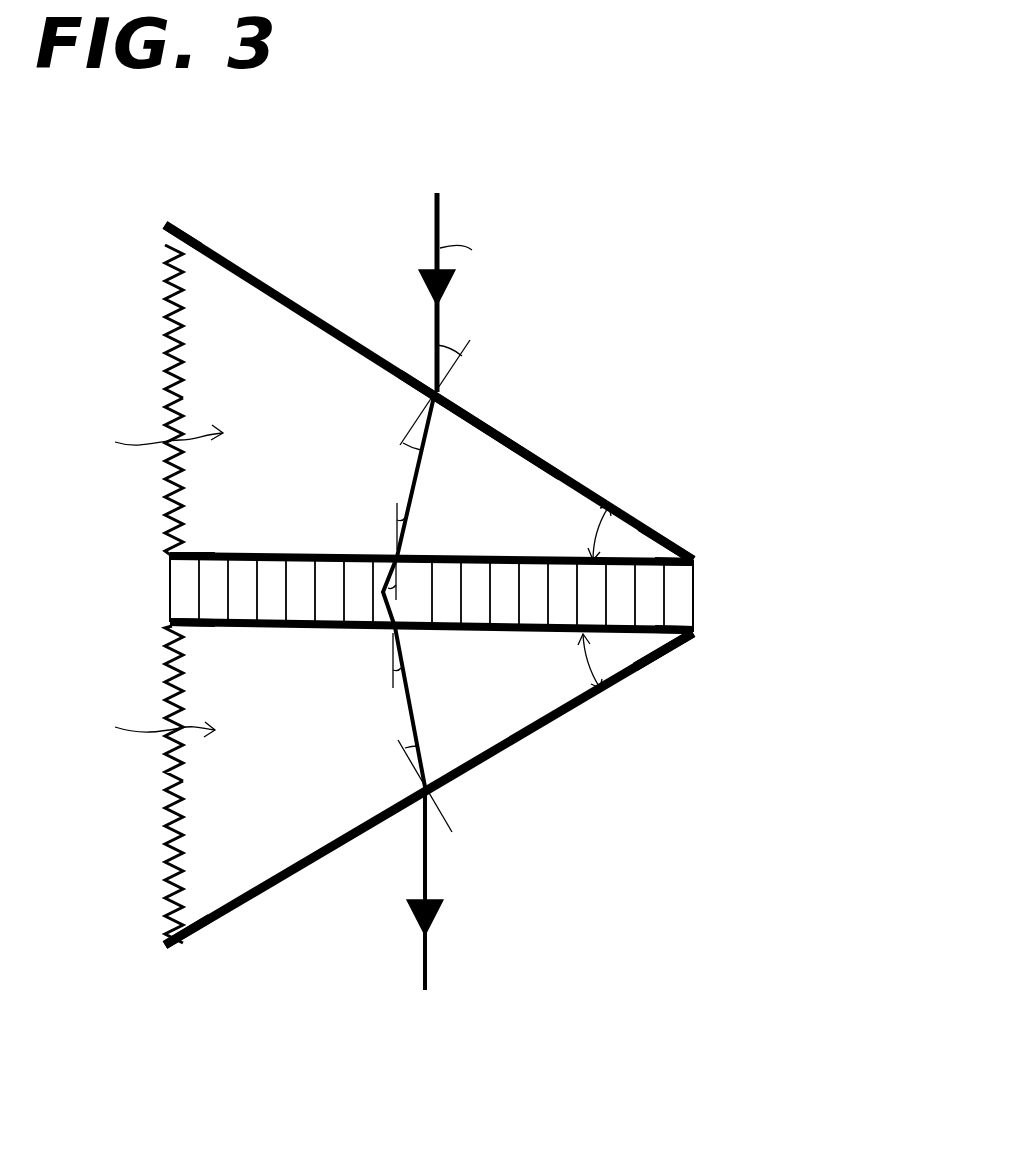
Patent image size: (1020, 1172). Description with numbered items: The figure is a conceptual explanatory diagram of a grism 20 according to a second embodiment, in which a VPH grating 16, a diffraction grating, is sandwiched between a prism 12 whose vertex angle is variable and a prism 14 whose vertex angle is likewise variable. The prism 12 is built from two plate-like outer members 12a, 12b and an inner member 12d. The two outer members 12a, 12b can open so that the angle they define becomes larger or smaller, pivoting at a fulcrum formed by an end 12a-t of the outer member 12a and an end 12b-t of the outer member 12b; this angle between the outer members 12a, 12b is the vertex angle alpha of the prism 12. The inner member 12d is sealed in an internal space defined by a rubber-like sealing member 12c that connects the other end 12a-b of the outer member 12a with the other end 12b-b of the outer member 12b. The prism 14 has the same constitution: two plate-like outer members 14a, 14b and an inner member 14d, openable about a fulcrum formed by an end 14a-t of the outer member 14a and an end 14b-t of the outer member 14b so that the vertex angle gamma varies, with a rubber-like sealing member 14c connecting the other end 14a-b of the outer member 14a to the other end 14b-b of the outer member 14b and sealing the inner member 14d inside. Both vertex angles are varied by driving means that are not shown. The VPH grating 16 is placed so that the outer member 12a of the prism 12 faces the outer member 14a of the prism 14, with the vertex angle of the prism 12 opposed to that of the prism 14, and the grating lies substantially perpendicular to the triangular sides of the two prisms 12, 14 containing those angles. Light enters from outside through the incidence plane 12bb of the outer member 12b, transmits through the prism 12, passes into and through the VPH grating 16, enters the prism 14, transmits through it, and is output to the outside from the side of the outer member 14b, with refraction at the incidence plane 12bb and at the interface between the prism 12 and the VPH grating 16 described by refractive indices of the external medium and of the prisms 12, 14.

The grism 20 is at (626, 252).
The prism 12 is at (247, 275).
The outer member 12a is at (297, 553).
The other end of outer member 12a 12a-b is at (207, 552).
The end of outer member 12a 12a-t is at (655, 563).
The outer member 12b is at (308, 315).
The other end of outer member 12b 12b-b is at (197, 238).
The end of outer member 12b 12b-t is at (653, 536).
The incidence plane 12bb is at (540, 460).
The sealing member 12c is at (177, 387).
The inner member 12d is at (200, 320).
The VPH grating 16 is at (170, 593).
The prism 14 is at (292, 872).
The outer member 14a is at (295, 628).
The other end of outer member 14a 14a-b is at (207, 628).
The end of outer member 14a 14a-t is at (660, 624).
The outer member 14b is at (505, 748).
The other end of outer member 14b 14b-b is at (210, 920).
The end of outer member 14b 14b-t is at (643, 664).
The sealing member 14c is at (178, 748).
The inner member 14d is at (198, 853).